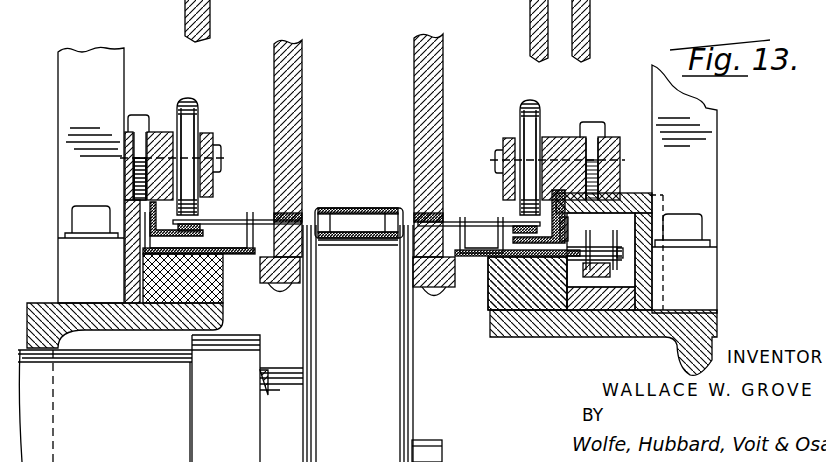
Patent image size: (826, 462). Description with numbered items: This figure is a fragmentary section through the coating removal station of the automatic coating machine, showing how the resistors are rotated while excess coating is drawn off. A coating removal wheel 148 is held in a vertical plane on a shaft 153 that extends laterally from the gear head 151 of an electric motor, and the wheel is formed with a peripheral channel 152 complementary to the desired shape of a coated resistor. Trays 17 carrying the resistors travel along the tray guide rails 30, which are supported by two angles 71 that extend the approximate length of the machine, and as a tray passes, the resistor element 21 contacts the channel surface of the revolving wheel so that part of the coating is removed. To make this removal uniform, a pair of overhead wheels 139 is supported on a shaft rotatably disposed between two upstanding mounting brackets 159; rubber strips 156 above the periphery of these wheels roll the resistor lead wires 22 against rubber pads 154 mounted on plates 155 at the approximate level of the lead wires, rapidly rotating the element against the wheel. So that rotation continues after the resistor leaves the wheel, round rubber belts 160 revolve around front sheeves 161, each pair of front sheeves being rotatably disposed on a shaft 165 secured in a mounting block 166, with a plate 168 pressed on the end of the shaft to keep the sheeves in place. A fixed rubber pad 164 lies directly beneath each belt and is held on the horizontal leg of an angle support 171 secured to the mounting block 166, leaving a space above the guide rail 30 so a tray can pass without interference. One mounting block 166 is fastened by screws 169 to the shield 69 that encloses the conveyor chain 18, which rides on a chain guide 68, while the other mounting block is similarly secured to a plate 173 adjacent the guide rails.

The upstanding mounting bracket 159 is at (68, 58).
The plate 173 is at (140, 250).
The screw 169 is at (128, 126).
The mounting block 166 is at (160, 134).
The round rubber belt 160 is at (190, 102).
The front sheeve 161 is at (200, 120).
The plate 168 is at (213, 140).
The shaft 165 is at (222, 158).
The angle support 171 is at (143, 194).
The lead wire 22 is at (238, 236).
The fixed rubber pad 164 is at (196, 222).
The tray guide rail 30 is at (192, 289).
The angle 71 is at (52, 302).
The gear head 151 is at (134, 422).
The overhead wheel 139 is at (420, 107).
The tray 17 is at (300, 214).
The rubber strip 156 is at (408, 218).
The coating removal wheel 148 is at (382, 390).
The peripheral channel 152 is at (356, 234).
The resistor element 21 is at (356, 214).
The rubber pad 154 is at (302, 262).
The plate 155 is at (266, 282).
The shaft 153 is at (425, 440).
The shield 69 is at (634, 196).
The chain guide 68 is at (607, 290).
The conveyor chain 18 is at (612, 256).